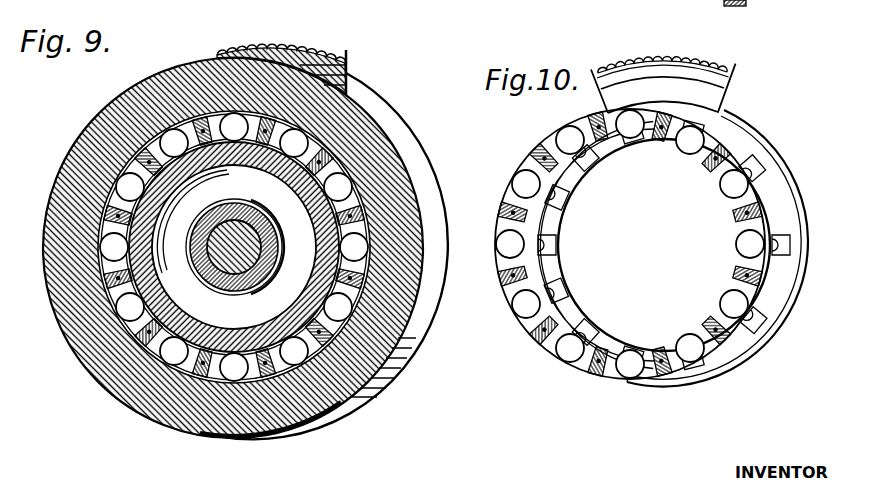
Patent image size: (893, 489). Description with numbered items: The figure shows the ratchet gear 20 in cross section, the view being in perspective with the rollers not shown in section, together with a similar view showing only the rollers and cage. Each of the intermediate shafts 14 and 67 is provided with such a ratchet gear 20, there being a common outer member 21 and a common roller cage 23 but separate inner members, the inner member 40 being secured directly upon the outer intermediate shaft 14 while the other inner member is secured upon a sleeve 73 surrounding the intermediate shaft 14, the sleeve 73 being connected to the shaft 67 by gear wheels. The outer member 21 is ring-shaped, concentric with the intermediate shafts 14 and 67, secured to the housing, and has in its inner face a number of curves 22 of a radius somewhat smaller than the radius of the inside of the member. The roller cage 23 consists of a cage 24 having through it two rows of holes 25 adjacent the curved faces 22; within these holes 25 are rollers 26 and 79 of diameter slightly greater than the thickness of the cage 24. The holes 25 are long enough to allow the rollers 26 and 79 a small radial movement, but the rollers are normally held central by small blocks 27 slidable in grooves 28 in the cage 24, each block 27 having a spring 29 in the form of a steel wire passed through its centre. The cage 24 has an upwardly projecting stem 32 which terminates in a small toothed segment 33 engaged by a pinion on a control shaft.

In FIG. 9, the ratchet gear 20 is at (457, 148).
In FIG. 9, the outer member 21 is at (410, 130).
In FIG. 9, the toothed segment 33 is at (298, 48).
In FIG. 10, the toothed segment 33 is at (729, 64).
In FIG. 9, the curves 22 is at (360, 184).
In FIG. 9, the blocks 27 is at (358, 208).
In FIG. 10, the blocks 27 is at (670, 0).
In FIG. 9, the spring 29 is at (507, 287).
In FIG. 10, the spring 29 is at (735, 279).
In FIG. 9, the rollers 26 is at (302, 138).
In FIG. 10, the rollers 26 is at (568, 140).
In FIG. 9, the inner member 40 is at (300, 246).
In FIG. 9, the sleeve 73 is at (247, 288).
In FIG. 9, the outer intermediate shaft 14 is at (218, 288).
In FIG. 9, the intermediate shaft 67 is at (235, 258).
In FIG. 10, the grooves 28 is at (636, 0).
In FIG. 10, the roller cage 23 is at (755, 93).
In FIG. 10, the stem 32 is at (663, 88).
In FIG. 10, the holes 25 is at (560, 208).
In FIG. 10, the cage 24 is at (542, 350).
In FIG. 10, the rollers 79 is at (603, 152).